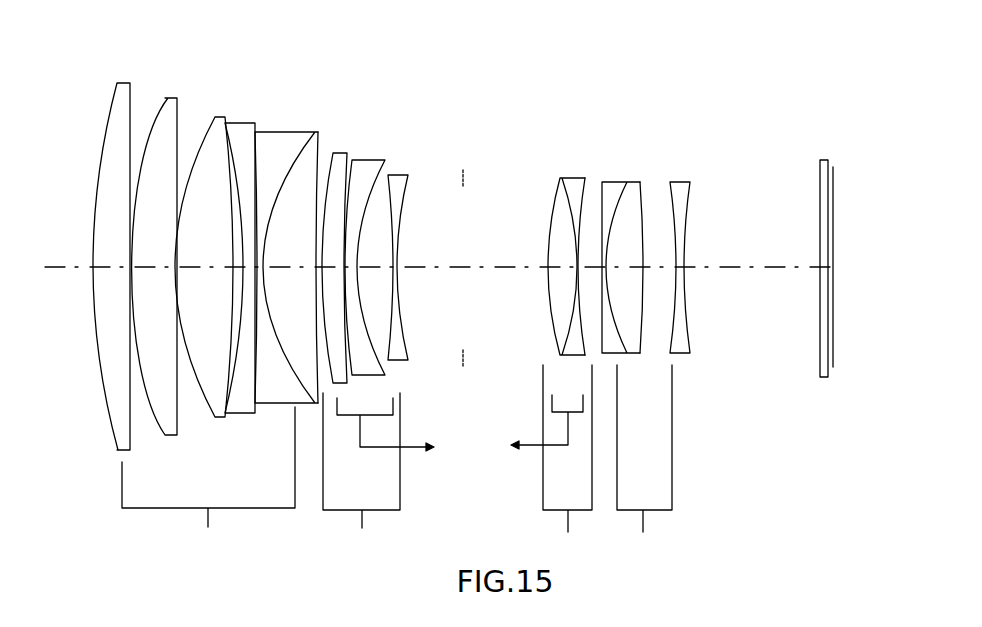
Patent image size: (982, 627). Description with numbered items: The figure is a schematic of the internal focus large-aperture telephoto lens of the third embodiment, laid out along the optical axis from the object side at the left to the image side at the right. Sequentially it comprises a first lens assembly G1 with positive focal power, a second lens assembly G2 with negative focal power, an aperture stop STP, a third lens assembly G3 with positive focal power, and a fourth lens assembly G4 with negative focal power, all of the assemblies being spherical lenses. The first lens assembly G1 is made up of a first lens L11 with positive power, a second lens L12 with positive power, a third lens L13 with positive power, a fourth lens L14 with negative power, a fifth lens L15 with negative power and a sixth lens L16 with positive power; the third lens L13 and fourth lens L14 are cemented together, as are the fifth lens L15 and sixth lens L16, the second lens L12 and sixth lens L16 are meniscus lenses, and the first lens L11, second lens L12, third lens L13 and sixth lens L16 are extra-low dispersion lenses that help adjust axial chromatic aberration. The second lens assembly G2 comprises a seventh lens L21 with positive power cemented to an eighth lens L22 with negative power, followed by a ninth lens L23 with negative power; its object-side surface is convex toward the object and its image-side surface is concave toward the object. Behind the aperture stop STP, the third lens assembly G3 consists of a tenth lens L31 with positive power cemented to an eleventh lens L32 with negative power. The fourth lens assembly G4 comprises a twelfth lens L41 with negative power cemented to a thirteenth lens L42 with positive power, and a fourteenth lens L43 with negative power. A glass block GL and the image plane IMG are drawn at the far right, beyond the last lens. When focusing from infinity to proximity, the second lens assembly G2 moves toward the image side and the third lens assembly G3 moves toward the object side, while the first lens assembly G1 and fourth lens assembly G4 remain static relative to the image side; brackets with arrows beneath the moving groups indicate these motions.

The first lens L11 is at (113, 105).
The second lens L12 is at (173, 98).
The third lens L13 is at (215, 117).
The fourth lens L14 is at (247, 123).
The fifth lens L15 is at (285, 132).
The sixth lens L16 is at (313, 134).
The seventh lens L21 is at (331, 152).
The eighth lens L22 is at (360, 160).
The ninth lens L23 is at (388, 175).
The aperture stop STP is at (463, 185).
The tenth lens L31 is at (562, 178).
The eleventh lens L32 is at (577, 178).
The twelfth lens L41 is at (617, 182).
The thirteenth lens L42 is at (627, 182).
The fourteenth lens L43 is at (680, 182).
The glass block / cover glass GL is at (820, 170).
The image plane IMG is at (835, 170).
The first lens assembly G1 is at (208, 480).
The second lens assembly G2 is at (378, 473).
The third lens assembly G3 is at (551, 459).
The fourth lens assembly G4 is at (644, 459).